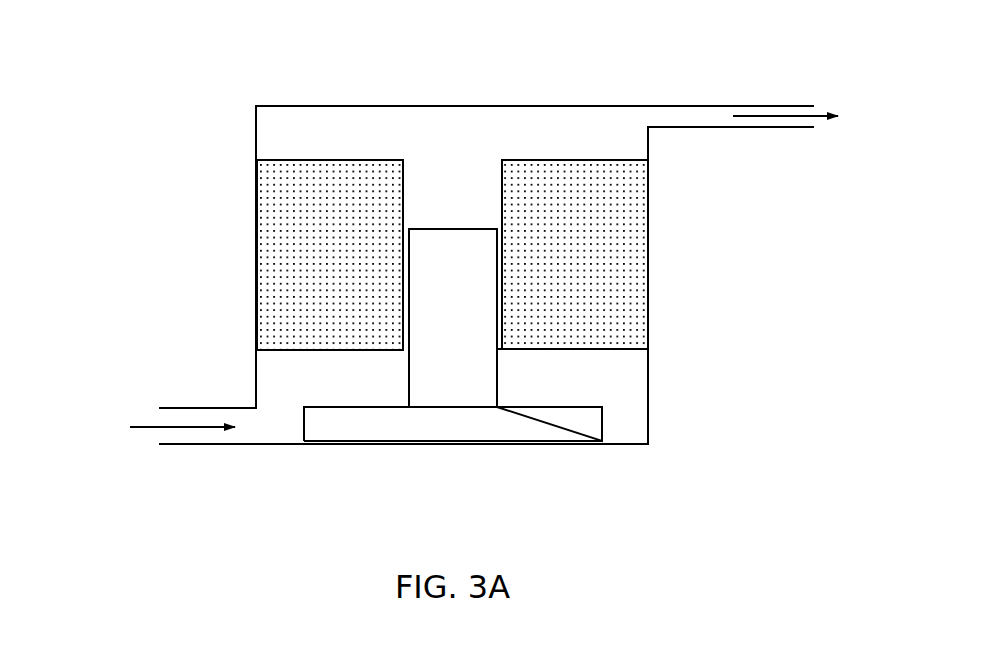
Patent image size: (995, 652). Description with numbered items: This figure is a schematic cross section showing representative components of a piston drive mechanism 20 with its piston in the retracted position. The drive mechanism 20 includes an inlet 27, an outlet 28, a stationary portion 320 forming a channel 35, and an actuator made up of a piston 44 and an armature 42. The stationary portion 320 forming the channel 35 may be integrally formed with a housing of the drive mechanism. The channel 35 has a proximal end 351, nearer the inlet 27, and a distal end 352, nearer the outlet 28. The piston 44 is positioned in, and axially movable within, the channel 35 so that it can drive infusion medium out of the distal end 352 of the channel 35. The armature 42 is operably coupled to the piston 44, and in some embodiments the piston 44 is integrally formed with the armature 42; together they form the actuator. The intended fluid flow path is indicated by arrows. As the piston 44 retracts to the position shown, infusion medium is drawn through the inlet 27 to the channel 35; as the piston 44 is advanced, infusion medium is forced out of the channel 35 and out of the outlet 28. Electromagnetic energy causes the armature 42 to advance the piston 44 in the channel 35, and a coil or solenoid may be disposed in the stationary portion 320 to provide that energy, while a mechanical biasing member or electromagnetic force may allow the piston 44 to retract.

The piston drive mechanism 20 is at (130, 243).
The inlet 27 is at (188, 407).
The outlet 28 is at (768, 132).
The stationary portion 320 is at (607, 235).
The distal end 352 is at (403, 160).
The channel 35 is at (445, 200).
The proximal end 351 is at (503, 353).
The piston 44 is at (467, 368).
The armature 42 is at (526, 427).